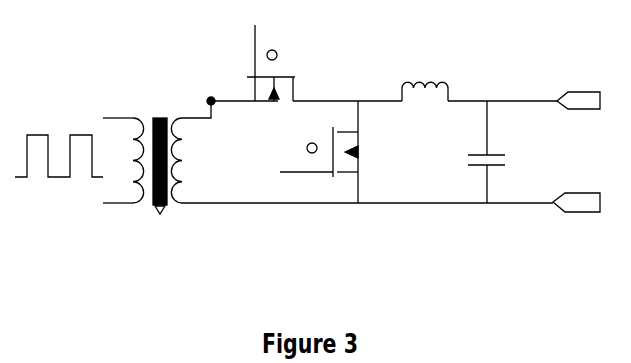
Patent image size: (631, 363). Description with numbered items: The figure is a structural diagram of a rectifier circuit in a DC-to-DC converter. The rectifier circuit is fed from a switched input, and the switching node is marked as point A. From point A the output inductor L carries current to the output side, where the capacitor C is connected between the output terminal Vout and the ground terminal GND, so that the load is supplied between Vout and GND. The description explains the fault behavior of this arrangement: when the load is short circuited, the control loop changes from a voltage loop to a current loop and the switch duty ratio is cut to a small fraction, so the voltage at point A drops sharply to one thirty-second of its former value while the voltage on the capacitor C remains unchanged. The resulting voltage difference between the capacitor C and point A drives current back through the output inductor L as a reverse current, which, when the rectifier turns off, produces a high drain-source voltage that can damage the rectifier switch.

The point A is at (209, 92).
The output inductor L is at (425, 80).
The capacitor C is at (494, 152).
The output voltage terminal Vout is at (578, 111).
The ground terminal GND is at (577, 215).